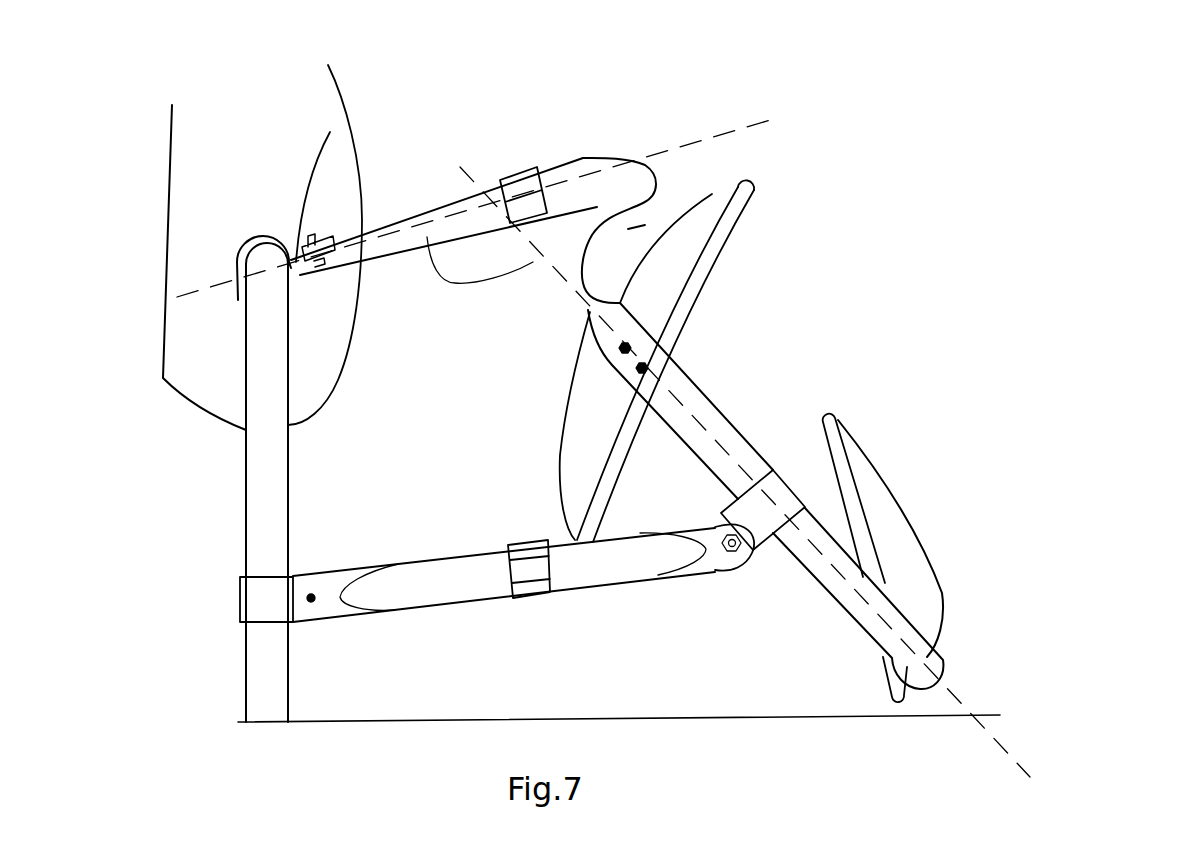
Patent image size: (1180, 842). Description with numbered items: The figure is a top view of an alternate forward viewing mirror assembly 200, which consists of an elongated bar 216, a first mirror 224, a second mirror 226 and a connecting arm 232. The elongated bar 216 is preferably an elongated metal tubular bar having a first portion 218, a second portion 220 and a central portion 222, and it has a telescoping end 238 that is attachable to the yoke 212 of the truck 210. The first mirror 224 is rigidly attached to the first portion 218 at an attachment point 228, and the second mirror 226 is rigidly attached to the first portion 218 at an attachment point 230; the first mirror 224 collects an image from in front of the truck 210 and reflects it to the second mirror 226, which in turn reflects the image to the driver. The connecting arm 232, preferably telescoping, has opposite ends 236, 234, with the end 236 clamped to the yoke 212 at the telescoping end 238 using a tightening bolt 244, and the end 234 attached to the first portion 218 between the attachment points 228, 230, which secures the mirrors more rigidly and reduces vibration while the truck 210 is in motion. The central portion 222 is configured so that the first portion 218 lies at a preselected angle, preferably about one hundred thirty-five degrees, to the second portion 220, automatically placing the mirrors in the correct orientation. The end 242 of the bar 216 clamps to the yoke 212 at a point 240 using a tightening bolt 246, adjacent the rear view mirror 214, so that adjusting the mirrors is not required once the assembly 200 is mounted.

The forward viewing mirror assembly 200 is at (927, 146).
The truck 210 is at (980, 743).
The yoke 212 is at (246, 467).
The rear view mirror 214 is at (348, 177).
The elongated bar 216 is at (663, 173).
The first portion 218 is at (827, 550).
The second portion 220 is at (553, 157).
The central portion 222 is at (730, 189).
The first mirror 224 is at (720, 253).
The second mirror 226 is at (930, 570).
The attachment point 228 is at (640, 352).
The attachment point 230 is at (922, 665).
The connecting arm 232 is at (593, 570).
The end 234 is at (748, 440).
The end 236 is at (282, 588).
The telescoping end 238 is at (440, 203).
The point 240 is at (235, 252).
The end 242 is at (330, 132).
The tightening bolt 244 is at (313, 600).
The tightening bolt 246 is at (338, 288).